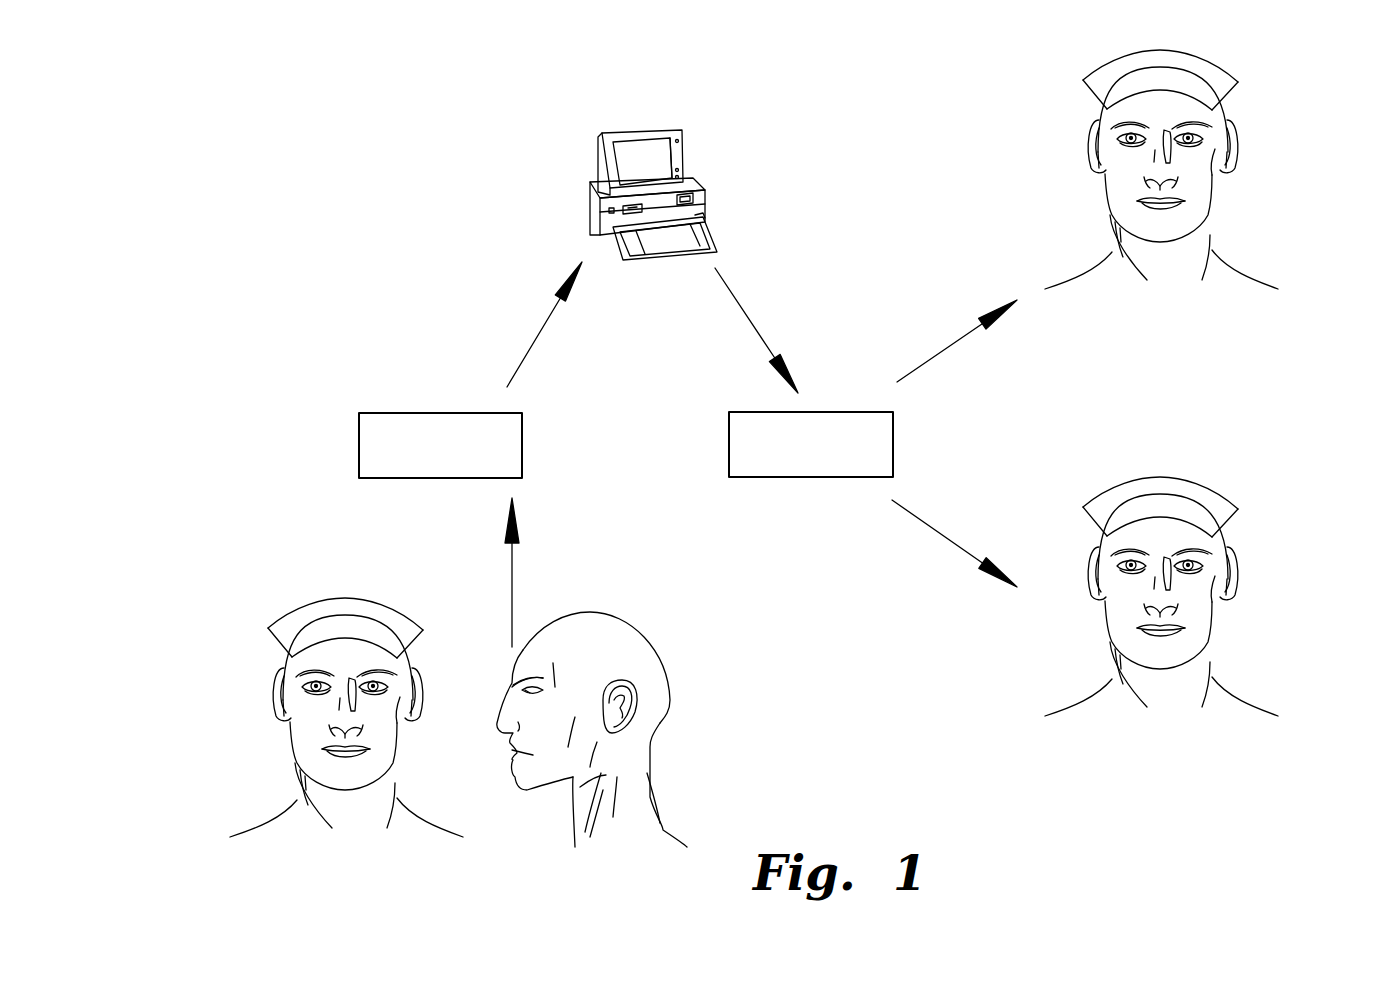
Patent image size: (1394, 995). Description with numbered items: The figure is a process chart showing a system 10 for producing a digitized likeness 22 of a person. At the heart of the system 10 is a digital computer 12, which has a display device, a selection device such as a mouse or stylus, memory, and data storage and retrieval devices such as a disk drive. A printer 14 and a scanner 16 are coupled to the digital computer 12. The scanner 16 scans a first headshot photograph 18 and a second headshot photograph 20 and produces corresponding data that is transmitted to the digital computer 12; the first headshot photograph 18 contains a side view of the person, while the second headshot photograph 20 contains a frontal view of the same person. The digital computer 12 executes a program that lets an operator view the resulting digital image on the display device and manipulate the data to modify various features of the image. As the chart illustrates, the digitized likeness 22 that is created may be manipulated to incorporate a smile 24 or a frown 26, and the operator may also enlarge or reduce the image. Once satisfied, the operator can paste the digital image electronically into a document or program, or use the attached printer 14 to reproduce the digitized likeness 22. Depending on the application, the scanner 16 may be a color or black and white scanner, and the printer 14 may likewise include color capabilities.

The system 10 is at (414, 139).
The digital computer 12 is at (727, 125).
The printer 14 is at (893, 448).
The scanner 16 is at (400, 413).
The first headshot photograph 18 is at (658, 645).
The second headshot photograph 20 is at (288, 665).
The digitized likeness 22 is at (1220, 110).
The smile 24 is at (1170, 208).
The frown 26 is at (1156, 624).